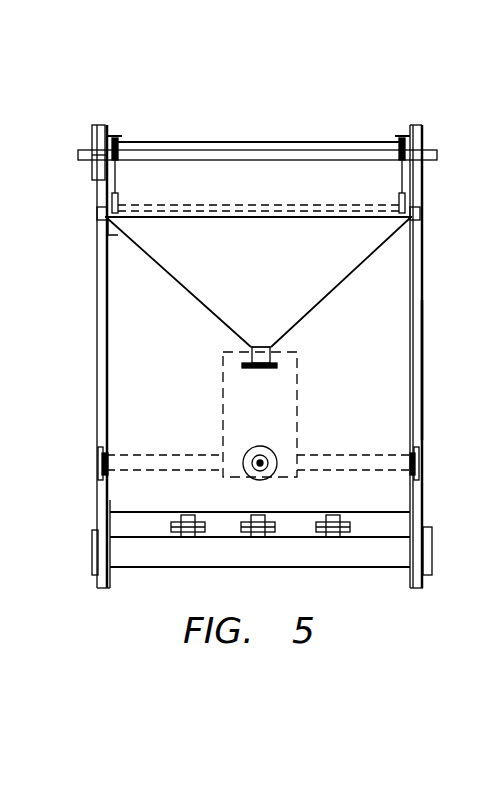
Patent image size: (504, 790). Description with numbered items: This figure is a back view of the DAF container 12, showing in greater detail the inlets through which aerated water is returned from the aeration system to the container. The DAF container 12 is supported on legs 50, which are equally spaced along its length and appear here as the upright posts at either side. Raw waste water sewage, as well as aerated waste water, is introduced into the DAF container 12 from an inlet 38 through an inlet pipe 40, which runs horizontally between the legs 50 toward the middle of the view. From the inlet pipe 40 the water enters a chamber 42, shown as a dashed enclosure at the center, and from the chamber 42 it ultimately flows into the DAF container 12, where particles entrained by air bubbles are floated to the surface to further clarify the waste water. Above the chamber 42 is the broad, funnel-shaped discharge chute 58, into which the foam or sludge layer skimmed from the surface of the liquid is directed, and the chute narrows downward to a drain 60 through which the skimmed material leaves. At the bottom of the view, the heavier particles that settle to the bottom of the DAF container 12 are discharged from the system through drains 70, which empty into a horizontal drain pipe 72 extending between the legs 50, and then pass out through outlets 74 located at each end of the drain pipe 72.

The DAF container 12 is at (166, 95).
The inlet 38 is at (98, 461).
The inlet pipe 40 is at (170, 458).
The chamber 42 is at (270, 415).
The legs 50 is at (424, 372).
The discharge chute 58 is at (318, 259).
The drain 60 is at (244, 366).
The drains 70 is at (242, 537).
The drain pipe 72 is at (320, 550).
The outlets 74 is at (92, 548).